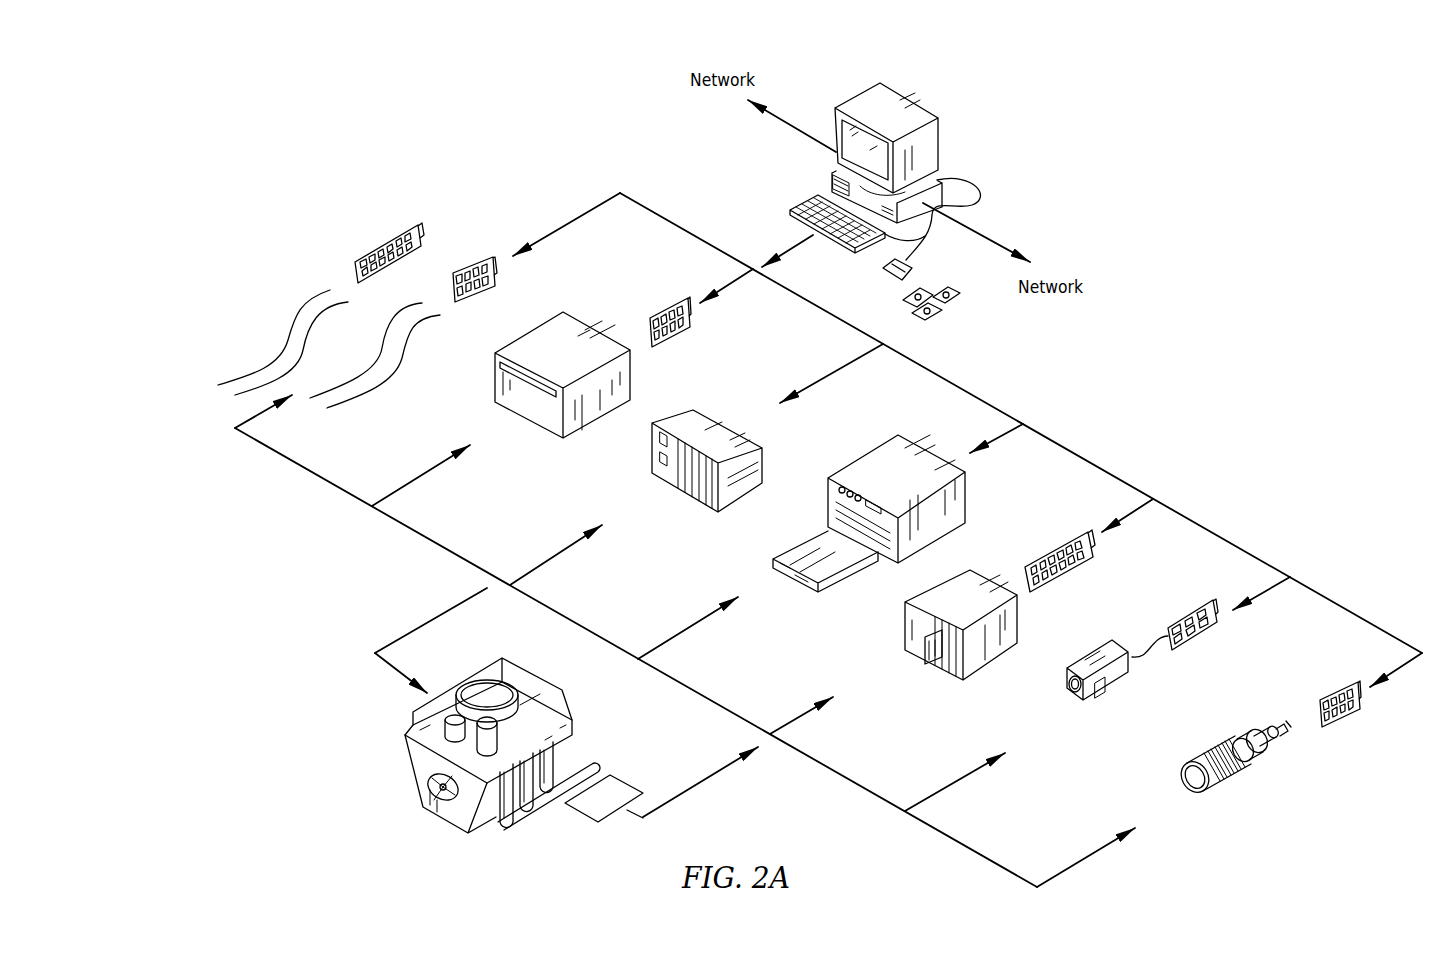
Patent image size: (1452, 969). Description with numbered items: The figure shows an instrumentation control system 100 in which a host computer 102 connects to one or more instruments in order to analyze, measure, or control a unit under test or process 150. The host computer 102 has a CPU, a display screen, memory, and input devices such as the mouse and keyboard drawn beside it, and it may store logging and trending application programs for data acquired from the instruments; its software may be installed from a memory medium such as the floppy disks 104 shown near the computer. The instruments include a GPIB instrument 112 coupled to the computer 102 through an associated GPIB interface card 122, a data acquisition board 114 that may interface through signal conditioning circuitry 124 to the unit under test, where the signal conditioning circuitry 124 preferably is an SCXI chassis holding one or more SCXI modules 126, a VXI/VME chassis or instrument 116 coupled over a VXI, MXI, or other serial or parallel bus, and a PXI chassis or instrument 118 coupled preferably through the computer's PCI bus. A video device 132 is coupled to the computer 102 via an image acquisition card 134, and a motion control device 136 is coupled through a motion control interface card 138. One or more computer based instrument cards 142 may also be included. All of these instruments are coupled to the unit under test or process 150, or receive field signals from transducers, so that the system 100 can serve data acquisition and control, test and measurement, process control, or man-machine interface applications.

The instrumentation control system 100 is at (1263, 148).
The host computer 102 is at (888, 105).
The floppy disks 104 is at (935, 310).
The GPIB instrument 112 is at (540, 348).
The data acquisition board 114 is at (1078, 533).
The VXI/VME chassis or instrument 116 is at (875, 470).
The PXI chassis or instrument 118 is at (680, 425).
The GPIB interface card 122 is at (668, 313).
The signal conditioning circuitry 124 is at (917, 633).
The SCXI module 126 is at (933, 647).
The video device 132 is at (1105, 683).
The image acquisition card 134 is at (1187, 613).
The motion control device 136 is at (1217, 785).
The motion control interface card 138 is at (1340, 715).
The computer based instrument cards 142 is at (357, 262).
The unit under test or process 150 is at (422, 759).